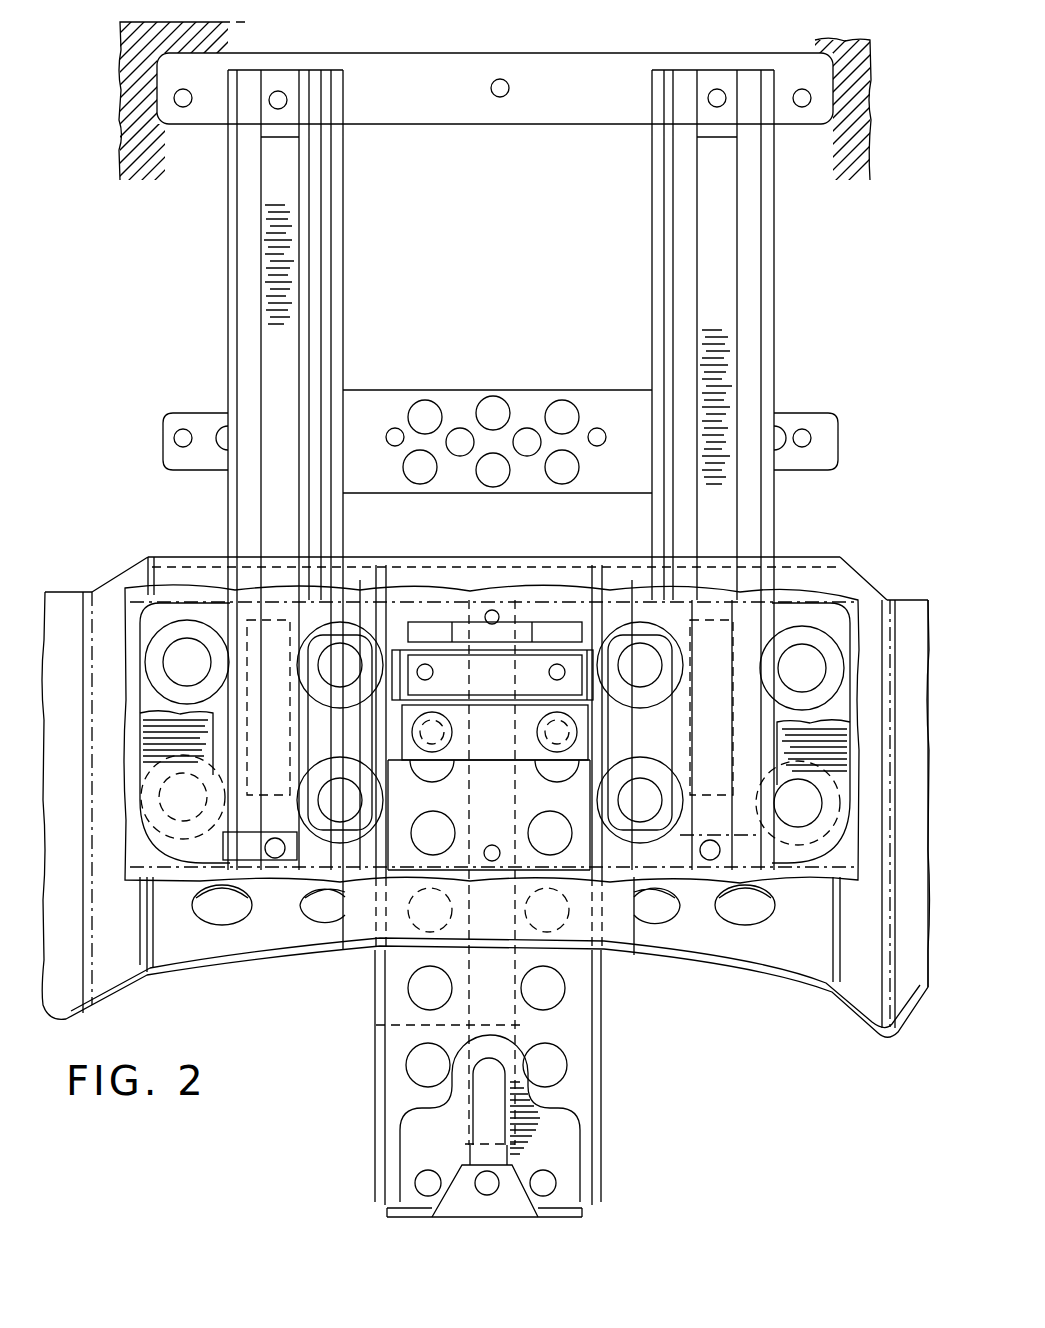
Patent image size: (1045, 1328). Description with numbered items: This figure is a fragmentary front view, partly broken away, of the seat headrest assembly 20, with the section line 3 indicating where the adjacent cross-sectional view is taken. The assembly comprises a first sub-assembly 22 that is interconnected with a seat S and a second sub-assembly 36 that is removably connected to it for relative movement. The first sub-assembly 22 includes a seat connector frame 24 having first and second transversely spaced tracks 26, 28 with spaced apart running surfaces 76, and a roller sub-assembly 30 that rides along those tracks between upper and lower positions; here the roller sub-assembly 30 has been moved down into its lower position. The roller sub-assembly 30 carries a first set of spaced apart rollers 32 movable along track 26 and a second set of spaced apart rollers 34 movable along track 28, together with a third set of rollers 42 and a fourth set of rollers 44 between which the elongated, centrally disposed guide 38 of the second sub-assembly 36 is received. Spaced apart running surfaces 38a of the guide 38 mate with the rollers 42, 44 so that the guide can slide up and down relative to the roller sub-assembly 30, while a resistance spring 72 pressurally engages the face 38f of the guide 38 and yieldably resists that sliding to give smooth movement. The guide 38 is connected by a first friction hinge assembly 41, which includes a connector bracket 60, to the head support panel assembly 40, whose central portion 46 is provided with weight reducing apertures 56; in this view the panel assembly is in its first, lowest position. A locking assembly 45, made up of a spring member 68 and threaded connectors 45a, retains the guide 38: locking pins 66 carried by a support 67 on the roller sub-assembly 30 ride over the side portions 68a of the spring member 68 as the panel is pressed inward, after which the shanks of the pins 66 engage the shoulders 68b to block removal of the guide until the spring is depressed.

The section line for FIG. 3 is at (140, 43).
The seat S is at (145, 132).
The seat headrest assembly 20 is at (158, 509).
The first sub-assembly 22 is at (796, 256).
The seat connector frame 24 is at (502, 512).
The first track 26 is at (233, 312).
The second track 28 is at (778, 316).
The roller sub-assembly 30 is at (351, 585).
The first set of spaced apart rollers 32 is at (160, 681).
The second set of spaced apart rollers 34 is at (840, 672).
The second sub-assembly 36 is at (828, 547).
The guide 38 is at (612, 1031).
The running surfaces 38a is at (375, 1075).
The face of guide 38f is at (376, 1031).
The head support panel assembly 40 is at (122, 570).
The first friction hinge assembly 41 is at (443, 622).
The third set of spaced apart rollers 42 is at (302, 659).
The fourth set of spaced apart rollers 44 is at (678, 659).
The locking assembly 45 is at (572, 1175).
The threaded connectors 45a is at (425, 1188).
The central portion 46 is at (282, 930).
The weight reducing apertures 56 is at (223, 918).
The connector bracket 60 is at (545, 628).
The locking pins 66 is at (550, 732).
The support 67 is at (496, 767).
The spring member 68 is at (487, 1042).
The side portions 68a is at (413, 1142).
The shoulders 68b is at (420, 1100).
The spring 72 is at (512, 788).
The running surfaces 76 is at (283, 158).